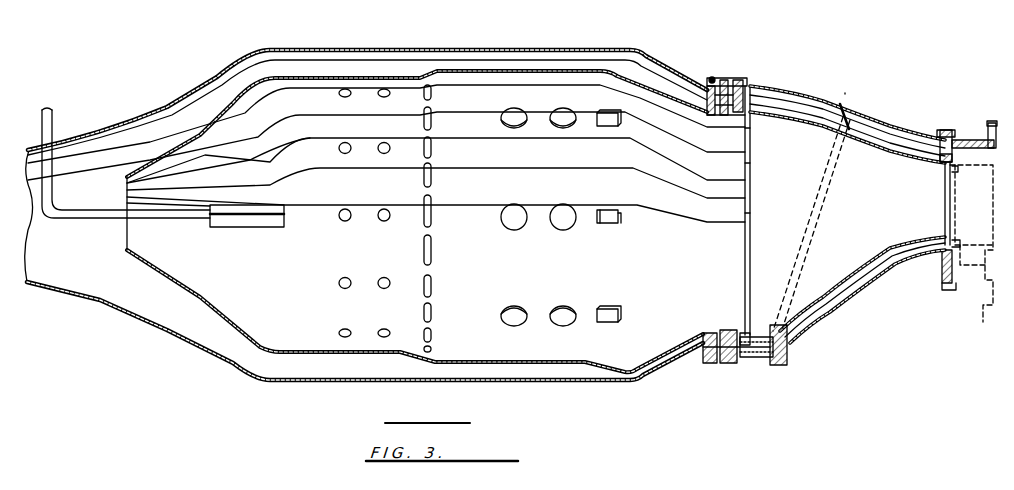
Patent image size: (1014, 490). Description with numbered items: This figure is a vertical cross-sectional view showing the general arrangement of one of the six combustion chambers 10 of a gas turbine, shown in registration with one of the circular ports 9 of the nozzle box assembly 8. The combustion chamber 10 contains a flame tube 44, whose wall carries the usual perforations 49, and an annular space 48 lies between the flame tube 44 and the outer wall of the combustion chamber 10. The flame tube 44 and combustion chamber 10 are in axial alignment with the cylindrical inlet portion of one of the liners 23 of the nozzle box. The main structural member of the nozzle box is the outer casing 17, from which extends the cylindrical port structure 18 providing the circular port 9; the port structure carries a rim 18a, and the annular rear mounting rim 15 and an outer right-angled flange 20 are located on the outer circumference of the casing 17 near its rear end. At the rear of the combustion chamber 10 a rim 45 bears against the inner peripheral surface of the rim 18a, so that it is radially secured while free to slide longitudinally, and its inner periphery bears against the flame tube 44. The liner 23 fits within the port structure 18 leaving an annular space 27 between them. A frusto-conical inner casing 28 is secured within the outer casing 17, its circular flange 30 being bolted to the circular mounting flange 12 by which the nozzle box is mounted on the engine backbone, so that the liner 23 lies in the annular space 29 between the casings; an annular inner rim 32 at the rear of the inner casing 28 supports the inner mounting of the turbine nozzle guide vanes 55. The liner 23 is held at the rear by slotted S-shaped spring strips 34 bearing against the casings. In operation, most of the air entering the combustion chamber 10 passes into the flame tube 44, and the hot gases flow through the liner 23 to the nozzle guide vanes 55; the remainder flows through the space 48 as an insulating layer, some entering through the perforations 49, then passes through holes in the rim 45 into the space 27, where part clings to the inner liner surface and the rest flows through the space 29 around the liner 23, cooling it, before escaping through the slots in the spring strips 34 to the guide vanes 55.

The nozzle box assembly 8 is at (845, 92).
The circular port 9 is at (772, 268).
The combustion chamber 10 is at (572, 46).
The circular mounting flange 12 is at (783, 366).
The annular rear mounting rim 15 is at (975, 138).
The outer casing 17 is at (878, 118).
The cylindrical port structure 18 is at (847, 118).
The rim 18a is at (720, 82).
The outer right-angled flange 20 is at (946, 129).
The liner 23 is at (870, 134).
The annular space 27 is at (746, 346).
The inner casing 28 is at (862, 290).
The annular space 29 is at (903, 262).
The circular flange 30 is at (787, 353).
The annular inner rim 32 is at (949, 277).
The inner circumferential spring strip 34 is at (952, 243).
The flame tube 44 is at (620, 68).
The rim 45 is at (710, 86).
The annular space 48 is at (520, 374).
The perforations 49 is at (562, 213).
The turbine nozzle guide vanes 55 is at (969, 251).